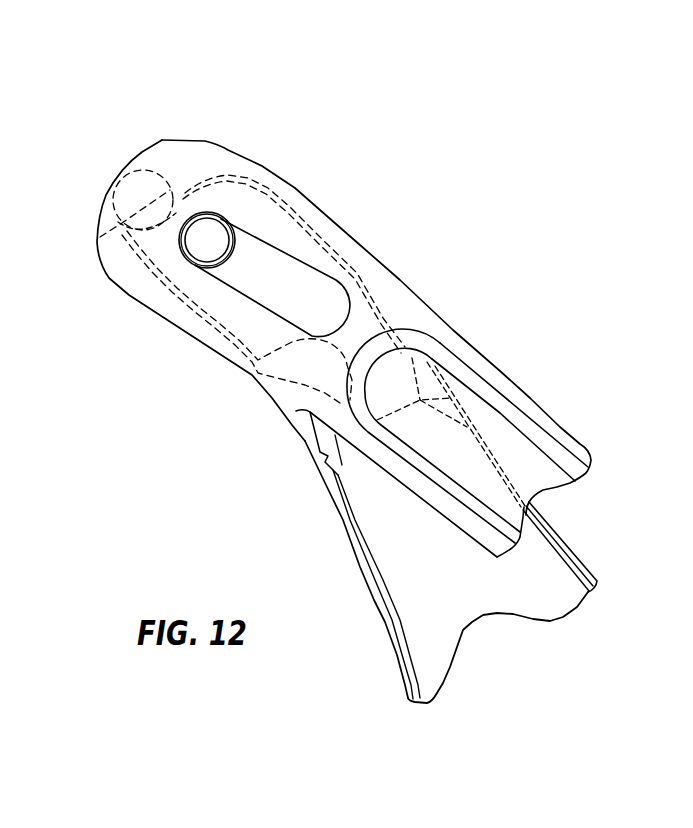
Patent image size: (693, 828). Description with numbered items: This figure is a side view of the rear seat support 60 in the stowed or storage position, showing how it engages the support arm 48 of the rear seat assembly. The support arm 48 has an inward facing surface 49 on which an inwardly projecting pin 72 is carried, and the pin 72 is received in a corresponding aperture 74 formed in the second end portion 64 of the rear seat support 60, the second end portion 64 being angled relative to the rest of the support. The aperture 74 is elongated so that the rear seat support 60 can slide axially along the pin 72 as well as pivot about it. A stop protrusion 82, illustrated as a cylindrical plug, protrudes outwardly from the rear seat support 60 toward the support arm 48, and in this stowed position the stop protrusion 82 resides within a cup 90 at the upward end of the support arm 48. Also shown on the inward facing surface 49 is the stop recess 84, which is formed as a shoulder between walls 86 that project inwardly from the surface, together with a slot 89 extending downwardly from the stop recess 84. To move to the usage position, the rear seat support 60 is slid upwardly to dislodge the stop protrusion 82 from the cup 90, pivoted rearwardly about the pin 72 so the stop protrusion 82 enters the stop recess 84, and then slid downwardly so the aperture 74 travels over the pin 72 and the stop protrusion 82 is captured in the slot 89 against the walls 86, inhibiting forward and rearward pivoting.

The support arm 48 is at (580, 563).
The inward facing surface 49 is at (423, 633).
The rear seat support 60 is at (581, 444).
The second end portion 64 is at (438, 310).
The pin 72 is at (209, 232).
The aperture 74 is at (297, 293).
The stop protrusion 82 is at (158, 172).
The stop recess 84 is at (272, 397).
The wall 86 is at (328, 487).
The slot 89 is at (290, 428).
The cup 90 is at (100, 237).